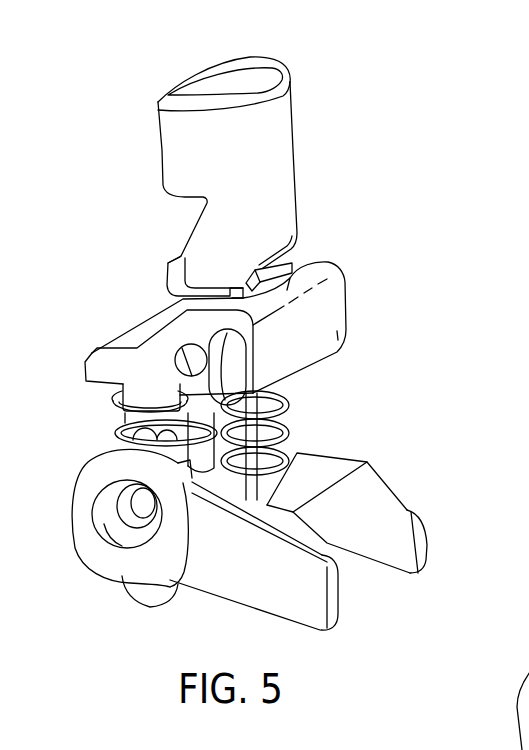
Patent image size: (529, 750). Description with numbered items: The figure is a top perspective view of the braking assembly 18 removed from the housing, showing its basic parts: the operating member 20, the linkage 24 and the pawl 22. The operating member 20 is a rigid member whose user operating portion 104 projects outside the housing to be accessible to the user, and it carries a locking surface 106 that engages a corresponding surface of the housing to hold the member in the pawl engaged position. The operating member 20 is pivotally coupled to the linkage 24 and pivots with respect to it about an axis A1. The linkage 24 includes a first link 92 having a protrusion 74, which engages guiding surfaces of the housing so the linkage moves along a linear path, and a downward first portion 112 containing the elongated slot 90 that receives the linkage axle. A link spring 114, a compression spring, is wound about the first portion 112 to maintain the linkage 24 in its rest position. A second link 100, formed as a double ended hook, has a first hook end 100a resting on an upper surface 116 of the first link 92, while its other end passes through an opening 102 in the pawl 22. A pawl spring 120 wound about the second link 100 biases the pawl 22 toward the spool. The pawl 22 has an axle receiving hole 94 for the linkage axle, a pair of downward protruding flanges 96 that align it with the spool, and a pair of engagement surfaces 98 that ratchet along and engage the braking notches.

The braking assembly 18 is at (386, 148).
The operating member 20 is at (293, 128).
The pawl 22 is at (213, 597).
The linkage 24 is at (118, 311).
The protrusion 74 is at (229, 347).
The slot 90 is at (117, 430).
The first link 92 is at (92, 352).
The axle receiving hole 94 is at (113, 545).
The flanges 96 is at (148, 610).
The engagement surfaces 98 is at (345, 634).
The second link 100 is at (298, 428).
The first hook end 100a is at (294, 265).
The opening 102 is at (300, 458).
The user operating portion 104 is at (196, 73).
The locking surface 106 is at (180, 257).
The first portion 112 is at (124, 414).
The link spring 114 is at (116, 397).
The upper surface 116 is at (238, 296).
The pawl spring 120 is at (292, 402).
The axis A1 is at (176, 360).